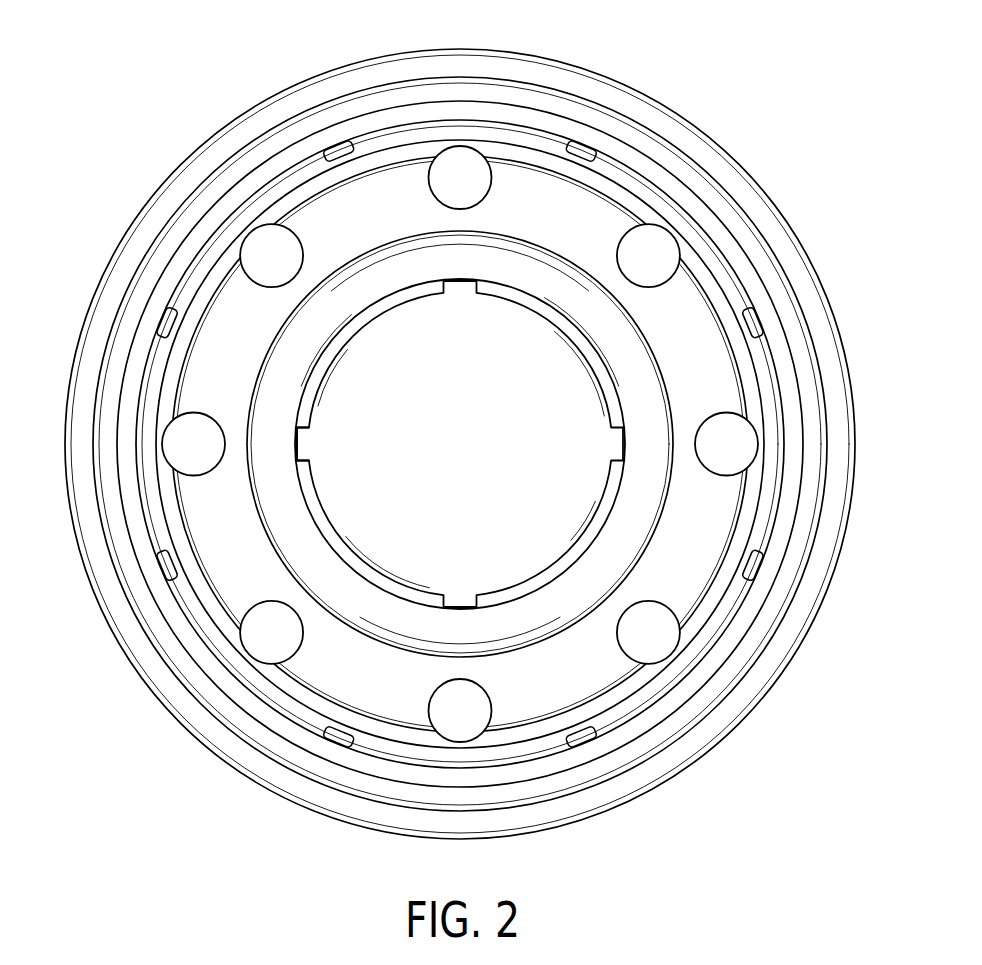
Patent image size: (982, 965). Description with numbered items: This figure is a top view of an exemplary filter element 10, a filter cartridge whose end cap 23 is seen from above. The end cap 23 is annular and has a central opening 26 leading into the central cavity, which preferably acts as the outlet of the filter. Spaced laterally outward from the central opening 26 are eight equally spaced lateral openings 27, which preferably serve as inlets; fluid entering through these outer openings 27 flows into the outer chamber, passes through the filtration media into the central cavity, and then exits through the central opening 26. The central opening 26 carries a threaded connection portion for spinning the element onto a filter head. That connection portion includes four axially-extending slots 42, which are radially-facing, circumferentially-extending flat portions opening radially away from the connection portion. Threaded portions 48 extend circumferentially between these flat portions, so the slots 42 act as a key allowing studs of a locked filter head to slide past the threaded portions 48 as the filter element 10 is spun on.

The filter element 10 is at (181, 76).
The end cap 23 is at (557, 708).
The central opening 26 is at (558, 413).
The lateral openings 27 is at (660, 632).
The axially-extending slot 42 is at (308, 438).
The threaded portions 48 is at (382, 326).